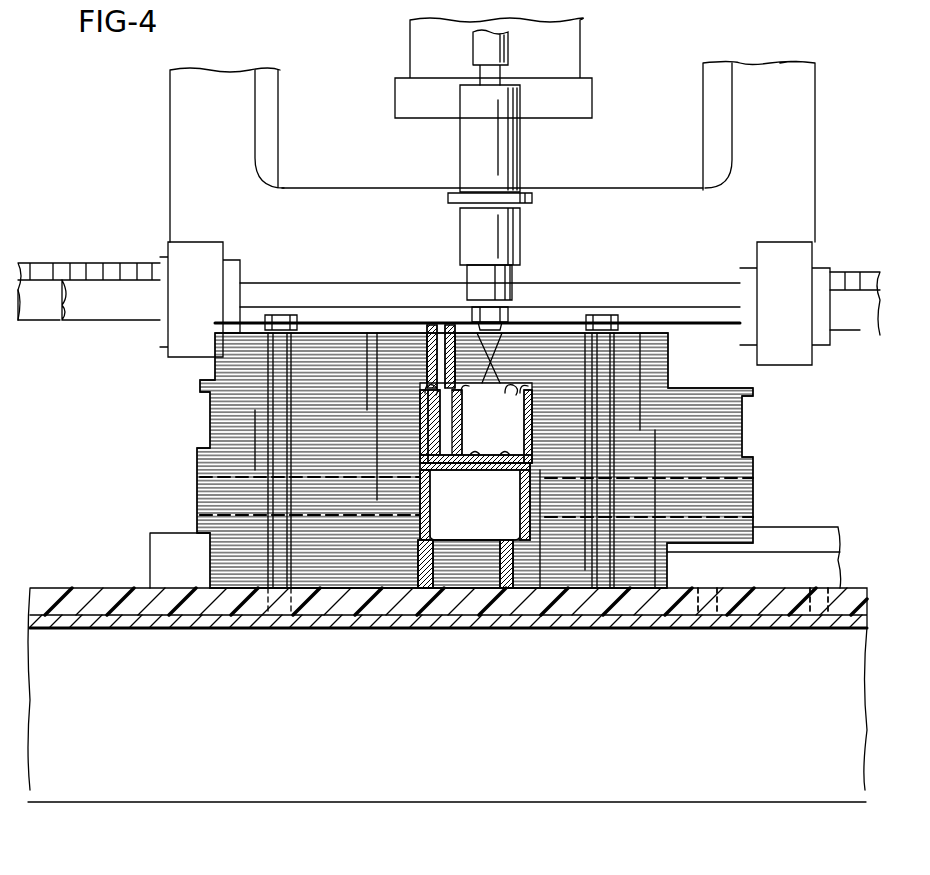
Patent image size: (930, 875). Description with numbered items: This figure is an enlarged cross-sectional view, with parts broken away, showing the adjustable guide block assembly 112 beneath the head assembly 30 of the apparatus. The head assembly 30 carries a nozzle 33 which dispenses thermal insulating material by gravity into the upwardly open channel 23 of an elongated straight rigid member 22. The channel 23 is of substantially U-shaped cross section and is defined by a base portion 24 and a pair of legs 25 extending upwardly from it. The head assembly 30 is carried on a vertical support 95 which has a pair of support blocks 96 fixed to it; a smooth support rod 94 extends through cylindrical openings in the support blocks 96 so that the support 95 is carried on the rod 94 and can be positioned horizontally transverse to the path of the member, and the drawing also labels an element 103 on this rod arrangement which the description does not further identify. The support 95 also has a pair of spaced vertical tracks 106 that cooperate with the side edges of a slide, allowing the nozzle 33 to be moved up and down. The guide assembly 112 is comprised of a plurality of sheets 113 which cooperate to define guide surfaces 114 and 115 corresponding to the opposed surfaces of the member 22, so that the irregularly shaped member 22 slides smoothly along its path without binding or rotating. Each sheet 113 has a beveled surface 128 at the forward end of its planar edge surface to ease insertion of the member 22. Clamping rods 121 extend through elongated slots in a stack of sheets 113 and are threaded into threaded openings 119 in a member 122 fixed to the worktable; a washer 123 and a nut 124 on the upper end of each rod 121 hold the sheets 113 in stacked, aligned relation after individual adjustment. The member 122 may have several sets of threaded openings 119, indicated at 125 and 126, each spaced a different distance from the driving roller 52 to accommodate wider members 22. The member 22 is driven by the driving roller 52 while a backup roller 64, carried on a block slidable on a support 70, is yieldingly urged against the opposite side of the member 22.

The elongated straight rigid member 22 is at (443, 510).
The upwardly open channel 23 is at (492, 437).
The base portion 24 is at (485, 467).
The legs 25 is at (512, 418).
The head assembly 30 is at (640, 148).
The nozzle 33 is at (530, 292).
The driving roller 52 is at (195, 490).
The backup roller 64 is at (755, 503).
The support 70 is at (838, 563).
The support rod 94 is at (80, 312).
The vertical support 95 is at (800, 123).
The support blocks 96 is at (195, 250).
The splined shaft 103 is at (62, 268).
The vertical tracks 106 is at (270, 80).
The adjustable guide block assembly 112 is at (108, 472).
The sheets 113 is at (207, 405).
The guide surface 114 is at (518, 510).
The guide surface 115 is at (430, 510).
The threaded openings 119 is at (252, 622).
The clamping rods 121 is at (305, 357).
The member 122 is at (165, 603).
The washer 123 is at (258, 320).
The nut 124 is at (290, 314).
The set of threaded openings 125 is at (722, 583).
The set of threaded openings 126 is at (821, 583).
The beveled surface 128 is at (452, 345).